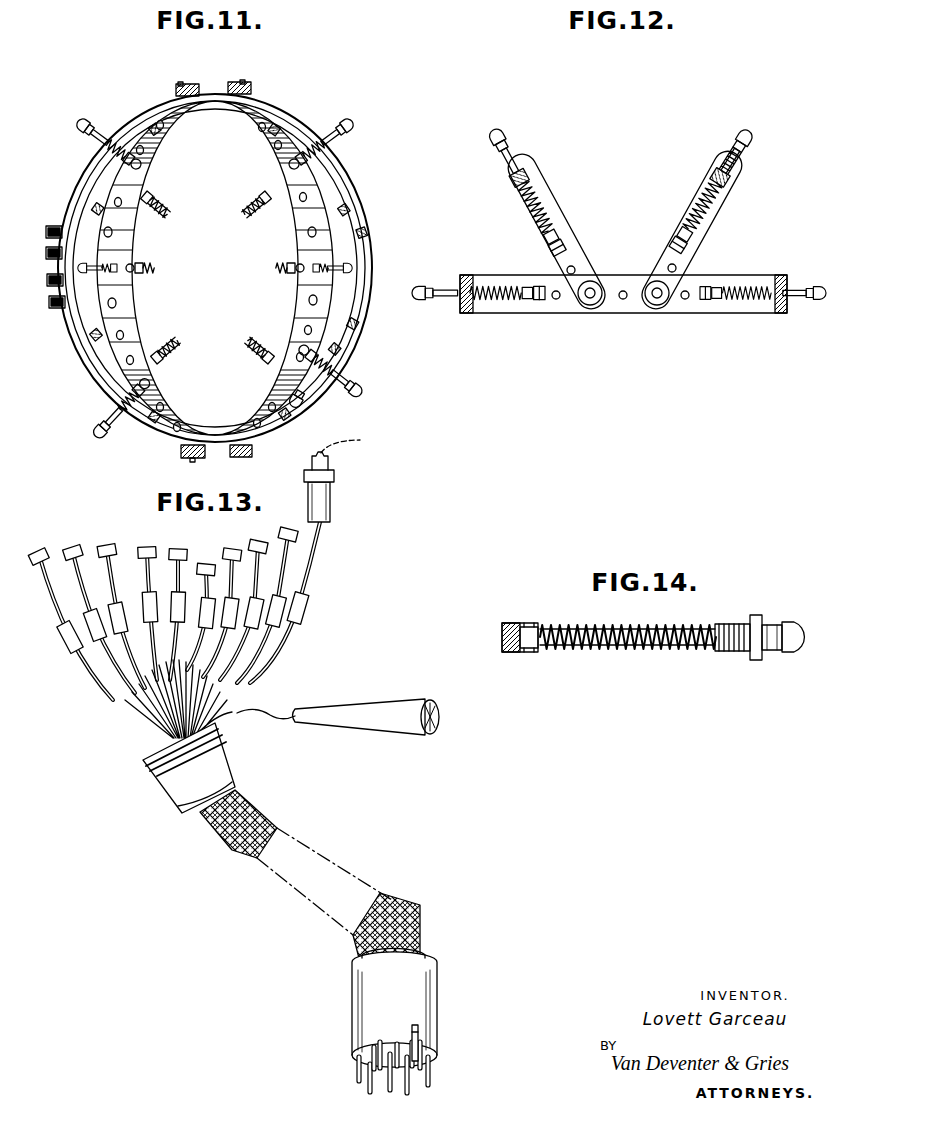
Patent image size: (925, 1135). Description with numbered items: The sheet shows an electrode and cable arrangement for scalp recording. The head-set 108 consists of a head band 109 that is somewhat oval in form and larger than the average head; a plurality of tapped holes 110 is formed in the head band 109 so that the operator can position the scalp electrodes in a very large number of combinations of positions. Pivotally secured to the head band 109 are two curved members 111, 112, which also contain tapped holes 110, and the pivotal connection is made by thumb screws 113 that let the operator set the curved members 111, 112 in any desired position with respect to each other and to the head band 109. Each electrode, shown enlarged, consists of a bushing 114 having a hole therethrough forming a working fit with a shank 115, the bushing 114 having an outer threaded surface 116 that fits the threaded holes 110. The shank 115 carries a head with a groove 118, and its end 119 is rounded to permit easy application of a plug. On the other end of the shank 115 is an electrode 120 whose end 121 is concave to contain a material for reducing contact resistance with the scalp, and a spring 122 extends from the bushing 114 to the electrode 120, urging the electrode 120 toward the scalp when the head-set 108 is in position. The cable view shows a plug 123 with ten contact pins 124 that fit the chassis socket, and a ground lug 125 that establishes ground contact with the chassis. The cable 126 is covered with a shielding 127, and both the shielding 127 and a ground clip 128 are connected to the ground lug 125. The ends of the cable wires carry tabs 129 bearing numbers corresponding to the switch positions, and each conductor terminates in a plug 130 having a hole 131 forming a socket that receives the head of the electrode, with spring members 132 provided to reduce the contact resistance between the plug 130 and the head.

In FIG. 11, the head-set 108 is at (293, 101).
In FIG. 11, the head band 109 is at (360, 240).
In FIG. 12, the head band 109 is at (505, 276).
In FIG. 11, the tapped holes 110 is at (75, 218).
In FIG. 12, the tapped holes 110 is at (622, 300).
In FIG. 11, the curved member 111 is at (112, 234).
In FIG. 12, the curved member 111 is at (545, 196).
In FIG. 11, the curved member 112 is at (308, 218).
In FIG. 12, the curved member 112 is at (690, 208).
In FIG. 11, the thumb screws 113 is at (235, 81).
In FIG. 12, the bushing 114 is at (505, 176).
In FIG. 14, the bushing 114 is at (775, 614).
In FIG. 12, the shank 115 is at (512, 160).
In FIG. 14, the shank 115 is at (627, 623).
In FIG. 12, the outer threaded surface 116 is at (738, 190).
In FIG. 14, the outer threaded surface 116 is at (728, 620).
In FIG. 12, the groove 118 is at (740, 138).
In FIG. 14, the groove 118 is at (744, 650).
In FIG. 11, the rounded end 119 is at (82, 120).
In FIG. 12, the rounded end 119 is at (497, 130).
In FIG. 14, the rounded end 119 is at (798, 653).
In FIG. 11, the electrode 120 is at (253, 205).
In FIG. 12, the electrode 120 is at (540, 232).
In FIG. 14, the electrode 120 is at (536, 621).
In FIG. 12, the concave end 121 is at (580, 255).
In FIG. 14, the concave end 121 is at (499, 626).
In FIG. 12, the spring 122 is at (530, 210).
In FIG. 14, the spring 122 is at (628, 655).
In FIG. 13, the plug 123 is at (418, 997).
In FIG. 13, the contact pins 124 is at (432, 1083).
In FIG. 13, the ground lug 125 is at (420, 1036).
In FIG. 13, the cable 126 is at (345, 868).
In FIG. 13, the shielding 127 is at (418, 908).
In FIG. 13, the ground clip 128 is at (430, 735).
In FIG. 13, the tabs 129 is at (300, 605).
In FIG. 13, the plug 130 is at (78, 548).
In FIG. 13, the hole 131 is at (362, 440).
In FIG. 13, the spring members 132 is at (308, 462).